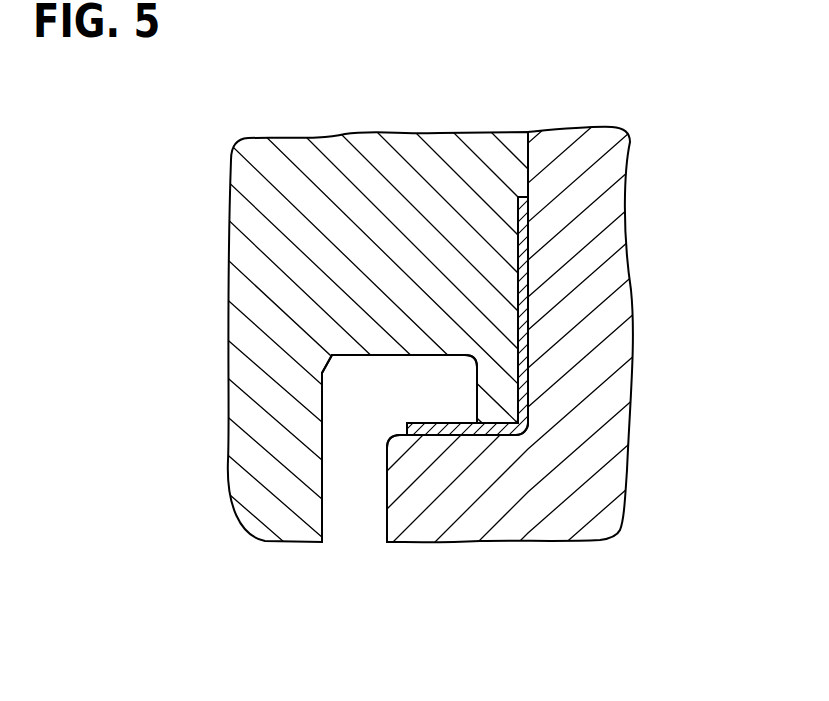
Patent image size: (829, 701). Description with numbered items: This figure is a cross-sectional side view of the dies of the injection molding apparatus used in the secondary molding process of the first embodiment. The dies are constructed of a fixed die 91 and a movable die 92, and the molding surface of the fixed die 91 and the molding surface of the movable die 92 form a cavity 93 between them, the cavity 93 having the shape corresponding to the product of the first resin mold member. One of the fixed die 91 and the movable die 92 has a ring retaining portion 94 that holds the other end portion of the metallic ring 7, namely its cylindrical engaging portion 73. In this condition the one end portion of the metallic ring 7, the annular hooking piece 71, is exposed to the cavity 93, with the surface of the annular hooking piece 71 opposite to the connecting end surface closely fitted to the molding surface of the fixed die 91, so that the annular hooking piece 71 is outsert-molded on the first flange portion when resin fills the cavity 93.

The movable die 92 is at (380, 177).
The fixed die 91 is at (538, 502).
The metallic ring 7 is at (528, 283).
The cylindrical engaging portion 73 is at (528, 283).
The annular hooking piece 71 is at (448, 438).
The ring retaining portion 94 is at (528, 235).
The cavity 93 is at (355, 510).